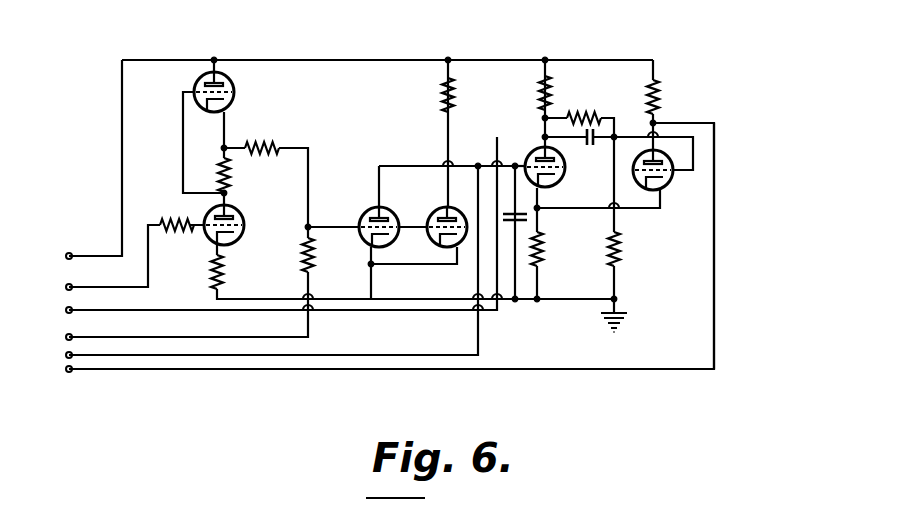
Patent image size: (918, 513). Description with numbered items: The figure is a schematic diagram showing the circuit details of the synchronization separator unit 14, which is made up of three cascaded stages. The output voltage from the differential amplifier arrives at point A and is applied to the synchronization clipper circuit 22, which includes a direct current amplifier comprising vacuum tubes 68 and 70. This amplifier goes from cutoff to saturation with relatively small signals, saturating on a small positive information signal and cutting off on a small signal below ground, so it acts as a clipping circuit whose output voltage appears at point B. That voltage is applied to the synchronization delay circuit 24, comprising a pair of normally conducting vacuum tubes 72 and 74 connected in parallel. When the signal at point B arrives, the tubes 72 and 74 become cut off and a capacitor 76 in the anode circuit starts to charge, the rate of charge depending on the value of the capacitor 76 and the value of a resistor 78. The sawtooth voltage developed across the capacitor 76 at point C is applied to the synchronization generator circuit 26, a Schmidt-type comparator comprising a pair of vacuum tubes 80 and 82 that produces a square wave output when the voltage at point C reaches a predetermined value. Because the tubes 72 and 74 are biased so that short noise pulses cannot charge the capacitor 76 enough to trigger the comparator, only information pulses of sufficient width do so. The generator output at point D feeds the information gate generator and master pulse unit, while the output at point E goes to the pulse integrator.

The synchronization separator unit 14 is at (723, 31).
The synchronization clipper circuit 22 is at (277, 56).
The synchronization delay circuit 24 is at (467, 58).
The synchronization generator circuit 26 is at (660, 58).
The vacuum tube 68 is at (235, 90).
The vacuum tube 70 is at (245, 219).
The vacuum tube 72 is at (377, 207).
The vacuum tube 74 is at (442, 207).
The capacitor 76 is at (530, 213).
The resistor 78 is at (456, 94).
The vacuum tube 80 is at (566, 170).
The vacuum tube 82 is at (673, 180).
The point A is at (159, 223).
The point B is at (338, 223).
The point C is at (522, 169).
The point D is at (120, 306).
The point E is at (716, 258).